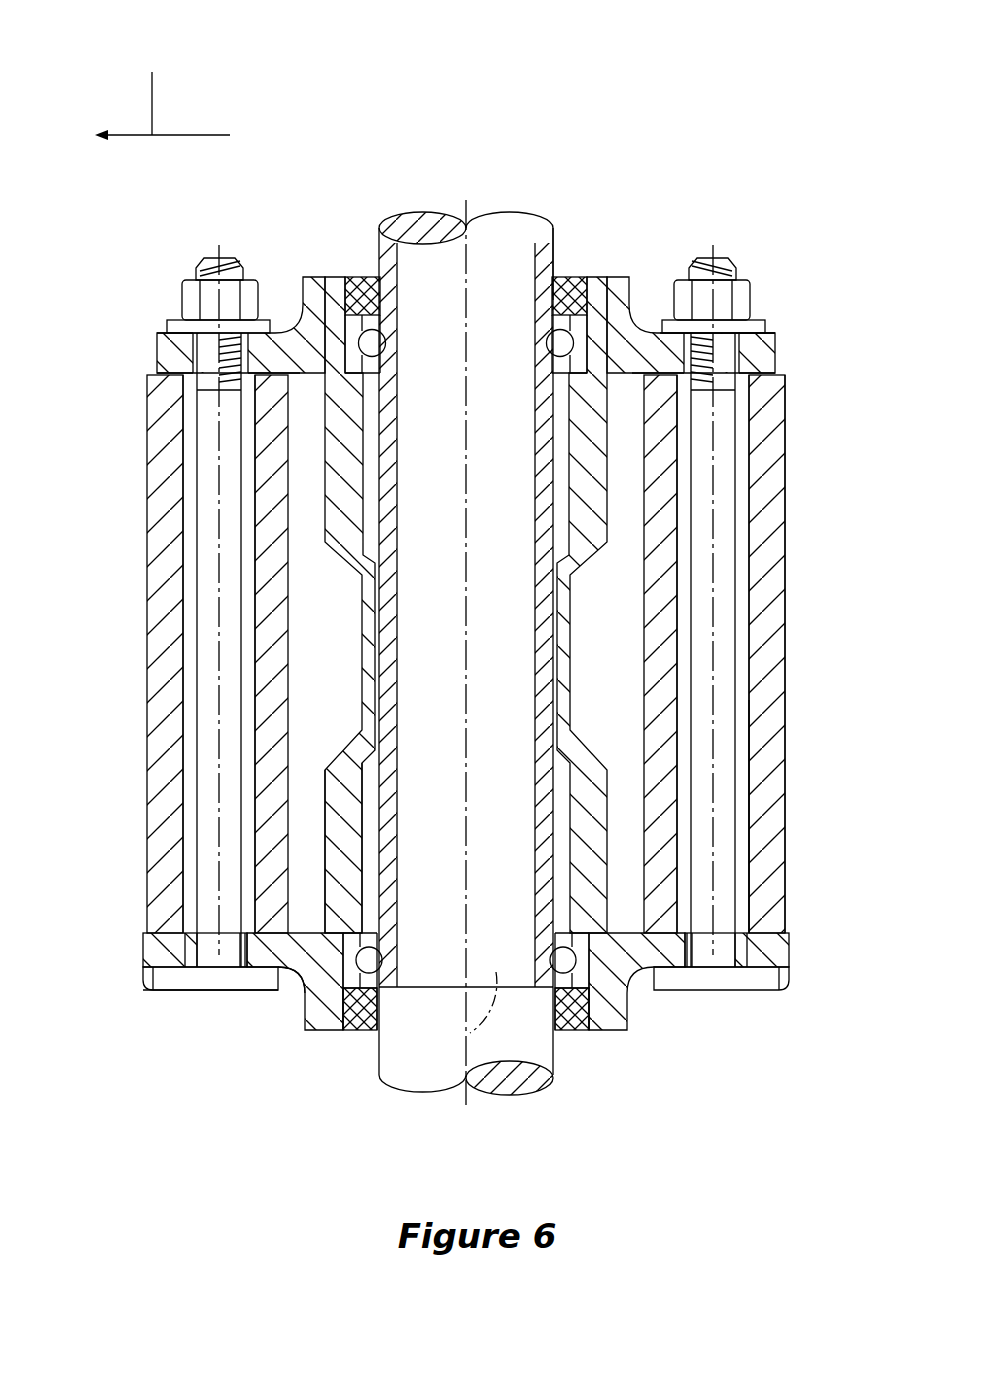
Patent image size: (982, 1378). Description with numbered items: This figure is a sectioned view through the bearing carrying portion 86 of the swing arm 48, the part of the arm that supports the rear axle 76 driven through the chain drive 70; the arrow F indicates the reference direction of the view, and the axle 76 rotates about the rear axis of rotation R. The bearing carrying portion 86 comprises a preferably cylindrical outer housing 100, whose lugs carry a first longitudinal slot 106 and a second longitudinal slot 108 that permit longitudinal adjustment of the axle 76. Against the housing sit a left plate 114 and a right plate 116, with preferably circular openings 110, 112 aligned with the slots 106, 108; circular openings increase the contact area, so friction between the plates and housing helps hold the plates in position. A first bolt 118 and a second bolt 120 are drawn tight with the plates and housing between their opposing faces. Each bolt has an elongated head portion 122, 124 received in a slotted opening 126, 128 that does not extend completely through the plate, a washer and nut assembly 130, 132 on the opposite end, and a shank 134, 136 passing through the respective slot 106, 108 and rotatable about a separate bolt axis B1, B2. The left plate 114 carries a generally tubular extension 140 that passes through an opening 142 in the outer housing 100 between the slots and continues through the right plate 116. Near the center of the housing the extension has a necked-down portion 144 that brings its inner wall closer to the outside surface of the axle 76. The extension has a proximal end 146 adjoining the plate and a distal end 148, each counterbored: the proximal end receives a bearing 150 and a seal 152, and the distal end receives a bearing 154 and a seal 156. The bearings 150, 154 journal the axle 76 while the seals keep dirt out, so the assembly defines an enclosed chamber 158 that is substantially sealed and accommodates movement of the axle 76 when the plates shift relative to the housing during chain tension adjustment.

The swing arm 48 is at (638, 158).
The chain drive 70 is at (746, 126).
The axle 76 is at (435, 1080).
The bearing carrying portion 86 is at (826, 509).
The outer housing 100 is at (775, 668).
The first longitudinal slot 106 is at (185, 808).
The second longitudinal slot 108 is at (747, 843).
The opening 110 is at (190, 346).
The opening 112 is at (756, 356).
The left plate 114 is at (272, 1000).
The right plate 116 is at (316, 288).
The first bolt 118 is at (190, 693).
The second bolt 120 is at (744, 807).
The elongated head portion 122 is at (163, 980).
The elongated head portion 124 is at (700, 990).
The slotted opening 126 is at (273, 997).
The slotted opening 128 is at (643, 992).
The washer and nut assembly 130 is at (188, 300).
The washer and nut assembly 132 is at (746, 297).
The shank 134 is at (205, 610).
The shank 136 is at (732, 460).
The tubular extension 140 is at (338, 838).
The opening 142 is at (655, 690).
The necked-down portion 144 is at (367, 649).
The proximal end 146 is at (313, 1034).
The distal end 148 is at (577, 248).
The bearing 150 is at (378, 956).
The seal 152 is at (360, 1032).
The bearing 154 is at (382, 353).
The seal 156 is at (578, 280).
The enclosed chamber 158 is at (623, 387).
The bolt axis B1 is at (218, 498).
The bolt axis B2 is at (713, 620).
The rear axis of rotation R is at (489, 986).
The forward direction F is at (162, 95).